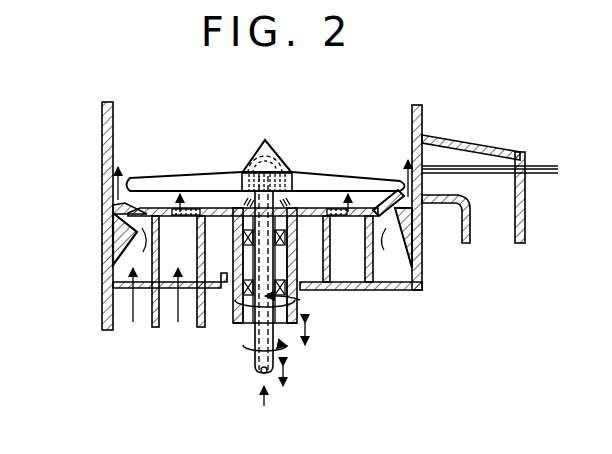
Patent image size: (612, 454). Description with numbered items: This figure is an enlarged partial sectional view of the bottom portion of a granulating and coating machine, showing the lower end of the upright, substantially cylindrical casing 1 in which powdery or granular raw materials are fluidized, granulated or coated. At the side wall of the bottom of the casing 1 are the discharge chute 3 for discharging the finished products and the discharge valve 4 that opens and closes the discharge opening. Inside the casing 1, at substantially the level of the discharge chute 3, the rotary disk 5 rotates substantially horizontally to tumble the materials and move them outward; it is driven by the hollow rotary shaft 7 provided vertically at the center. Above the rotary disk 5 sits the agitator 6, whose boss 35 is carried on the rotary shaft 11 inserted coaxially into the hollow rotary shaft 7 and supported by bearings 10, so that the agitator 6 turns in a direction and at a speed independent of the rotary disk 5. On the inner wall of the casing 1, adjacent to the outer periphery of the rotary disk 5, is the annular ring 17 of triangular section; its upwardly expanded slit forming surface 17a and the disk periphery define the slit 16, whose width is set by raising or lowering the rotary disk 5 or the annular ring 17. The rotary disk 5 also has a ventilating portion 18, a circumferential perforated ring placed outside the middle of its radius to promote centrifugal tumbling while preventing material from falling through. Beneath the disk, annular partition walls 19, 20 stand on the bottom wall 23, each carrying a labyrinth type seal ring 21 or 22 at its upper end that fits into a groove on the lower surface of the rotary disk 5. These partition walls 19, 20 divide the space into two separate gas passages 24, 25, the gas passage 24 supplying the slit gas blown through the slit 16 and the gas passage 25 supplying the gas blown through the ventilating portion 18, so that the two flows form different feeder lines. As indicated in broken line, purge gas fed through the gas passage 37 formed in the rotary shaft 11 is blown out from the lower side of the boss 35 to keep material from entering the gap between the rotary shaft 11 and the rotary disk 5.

The casing 1 is at (428, 107).
The discharge chute 3 is at (527, 204).
The discharge valve 4 is at (427, 158).
The rotary disk 5 is at (229, 209).
The agitator 6 is at (315, 178).
The hollow rotary shaft 7 is at (234, 312).
The bearings 10 is at (297, 298).
The rotary shaft 11 is at (276, 364).
The slit 16 is at (128, 211).
The annular ring 17 is at (122, 240).
The slit forming surface 17a is at (120, 219).
The ventilating portion 18 is at (190, 206).
The annular partition wall 19 is at (331, 262).
The annular partition wall 20 is at (374, 260).
The seal ring 21 is at (330, 208).
The seal ring 22 is at (373, 209).
The bottom wall 23 is at (412, 288).
The gas passage 24 is at (124, 285).
The gas passage 25 is at (174, 282).
The boss 35 is at (287, 172).
The gas passage 37 is at (262, 373).